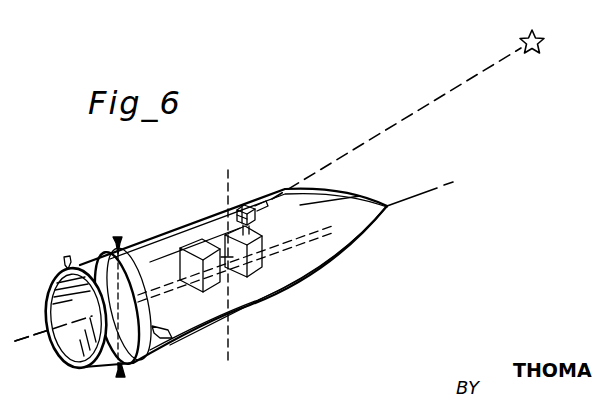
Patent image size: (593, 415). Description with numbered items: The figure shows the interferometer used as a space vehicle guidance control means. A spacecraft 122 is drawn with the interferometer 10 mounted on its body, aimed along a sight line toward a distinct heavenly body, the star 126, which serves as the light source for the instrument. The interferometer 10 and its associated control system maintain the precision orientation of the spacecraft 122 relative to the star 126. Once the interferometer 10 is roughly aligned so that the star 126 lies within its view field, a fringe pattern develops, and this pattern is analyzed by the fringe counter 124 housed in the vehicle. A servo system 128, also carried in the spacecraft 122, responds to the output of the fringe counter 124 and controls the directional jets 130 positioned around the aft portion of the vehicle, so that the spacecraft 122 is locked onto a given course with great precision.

The interferometer 10 is at (243, 204).
The spacecraft 122 is at (343, 255).
The fringe counter 124 is at (255, 276).
The star 126 is at (542, 47).
The servo system 128 is at (197, 247).
The directional jets 130 is at (67, 263).